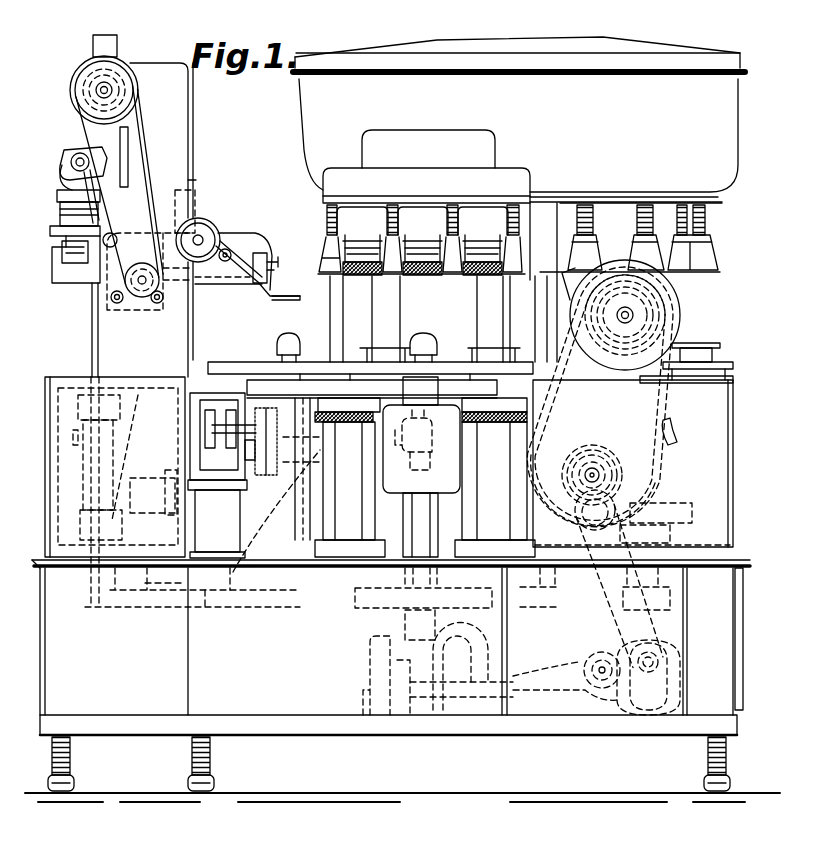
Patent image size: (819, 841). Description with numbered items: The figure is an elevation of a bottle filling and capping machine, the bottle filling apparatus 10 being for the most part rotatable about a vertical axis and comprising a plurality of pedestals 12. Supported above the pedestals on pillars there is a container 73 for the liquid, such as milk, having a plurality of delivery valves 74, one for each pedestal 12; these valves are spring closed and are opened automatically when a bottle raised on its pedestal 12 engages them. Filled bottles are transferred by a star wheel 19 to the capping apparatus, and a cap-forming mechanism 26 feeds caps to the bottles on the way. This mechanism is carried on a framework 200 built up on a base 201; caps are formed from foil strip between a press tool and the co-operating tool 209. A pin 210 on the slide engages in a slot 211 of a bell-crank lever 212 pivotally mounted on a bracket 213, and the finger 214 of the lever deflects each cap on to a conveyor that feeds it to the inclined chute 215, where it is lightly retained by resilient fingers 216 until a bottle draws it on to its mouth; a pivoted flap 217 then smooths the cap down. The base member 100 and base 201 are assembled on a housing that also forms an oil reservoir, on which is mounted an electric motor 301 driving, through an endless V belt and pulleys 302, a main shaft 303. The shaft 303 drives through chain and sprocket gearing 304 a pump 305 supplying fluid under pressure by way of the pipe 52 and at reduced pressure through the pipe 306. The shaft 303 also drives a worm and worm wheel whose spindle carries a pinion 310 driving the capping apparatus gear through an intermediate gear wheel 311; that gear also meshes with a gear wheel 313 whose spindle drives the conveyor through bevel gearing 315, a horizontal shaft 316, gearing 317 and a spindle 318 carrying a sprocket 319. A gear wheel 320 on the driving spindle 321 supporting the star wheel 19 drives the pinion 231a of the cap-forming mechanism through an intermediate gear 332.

The bottle filling apparatus 10 is at (725, 199).
The pedestals 12 is at (672, 360).
The star wheel 19 is at (312, 368).
The cap-forming mechanism 26 is at (185, 95).
The pipe 52 is at (546, 683).
The container 73 is at (717, 98).
The delivery valves 74 is at (692, 247).
The base member 100 is at (365, 568).
The framework 200 is at (108, 356).
The base 201 is at (38, 562).
The co-operating tool 209 is at (75, 254).
The pin 210 is at (126, 131).
The slot 211 is at (112, 158).
The bell-crank lever 212 is at (82, 194).
The bracket 213 is at (83, 155).
The finger 214 is at (100, 208).
The inclined chute 215 is at (251, 234).
The resilient fingers 216 is at (262, 284).
The pivoted flap 217 is at (300, 298).
The pinion 231a is at (89, 607).
The electric motor 301 is at (673, 292).
The endless V belt and pulleys 302 is at (654, 400).
The main shaft 303 is at (587, 452).
The chain and sprocket gearing 304 is at (631, 649).
The pump 305 is at (673, 640).
The pipe 306 is at (484, 640).
The pinion 310 is at (665, 598).
The intermediate gear wheel 311 is at (517, 603).
The gear wheel 313 is at (370, 603).
The bevel gearing 315 is at (418, 467).
The horizontal shaft 316 is at (217, 524).
The gearing 317 is at (217, 503).
The spindle 318 is at (230, 423).
The sprocket 319 is at (200, 427).
The gear wheel 320 is at (258, 607).
The driving spindle 321 is at (272, 519).
The intermediate gear 332 is at (205, 607).